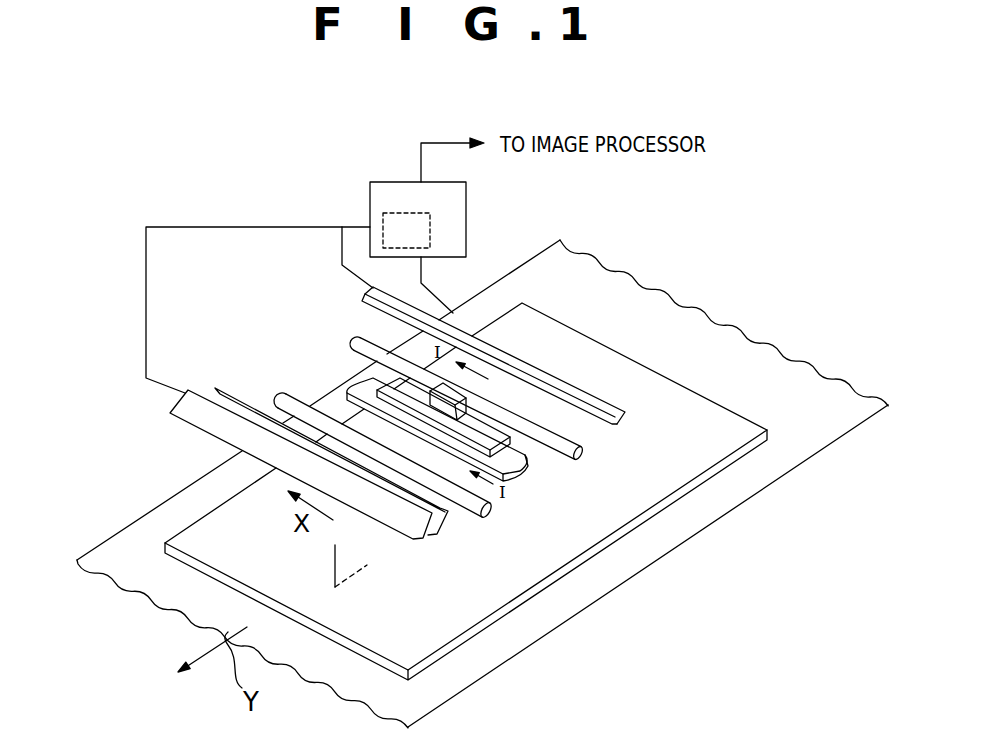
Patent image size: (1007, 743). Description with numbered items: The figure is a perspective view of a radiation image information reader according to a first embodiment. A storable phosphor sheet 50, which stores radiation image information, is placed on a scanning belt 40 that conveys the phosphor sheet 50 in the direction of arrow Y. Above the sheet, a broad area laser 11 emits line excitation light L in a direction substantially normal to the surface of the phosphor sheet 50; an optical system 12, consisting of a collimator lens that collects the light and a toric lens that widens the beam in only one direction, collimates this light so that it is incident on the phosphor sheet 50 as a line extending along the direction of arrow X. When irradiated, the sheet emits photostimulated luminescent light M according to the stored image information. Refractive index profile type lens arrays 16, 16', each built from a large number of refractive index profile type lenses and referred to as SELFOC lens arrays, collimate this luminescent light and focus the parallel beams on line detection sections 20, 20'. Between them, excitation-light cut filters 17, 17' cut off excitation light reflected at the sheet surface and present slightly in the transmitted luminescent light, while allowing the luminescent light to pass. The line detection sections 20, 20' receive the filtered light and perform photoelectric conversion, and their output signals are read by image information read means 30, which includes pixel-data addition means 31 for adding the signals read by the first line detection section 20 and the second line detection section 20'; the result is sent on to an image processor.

The broad area laser 11 is at (467, 410).
The optical system 12 is at (527, 438).
The refractive index profile type lens array 16 is at (492, 411).
The refractive index profile type lens array 16' is at (411, 466).
The excitation-light cut filter 17 is at (497, 375).
The excitation-light cut filter 17' is at (355, 476).
The line detection section 20 is at (447, 349).
The line detection section 20' is at (301, 491).
The image information read means 30 is at (466, 200).
The pixel-data addition means 31 is at (388, 213).
The scanning belt 40 is at (708, 332).
The storable phosphor sheet 50 is at (446, 624).